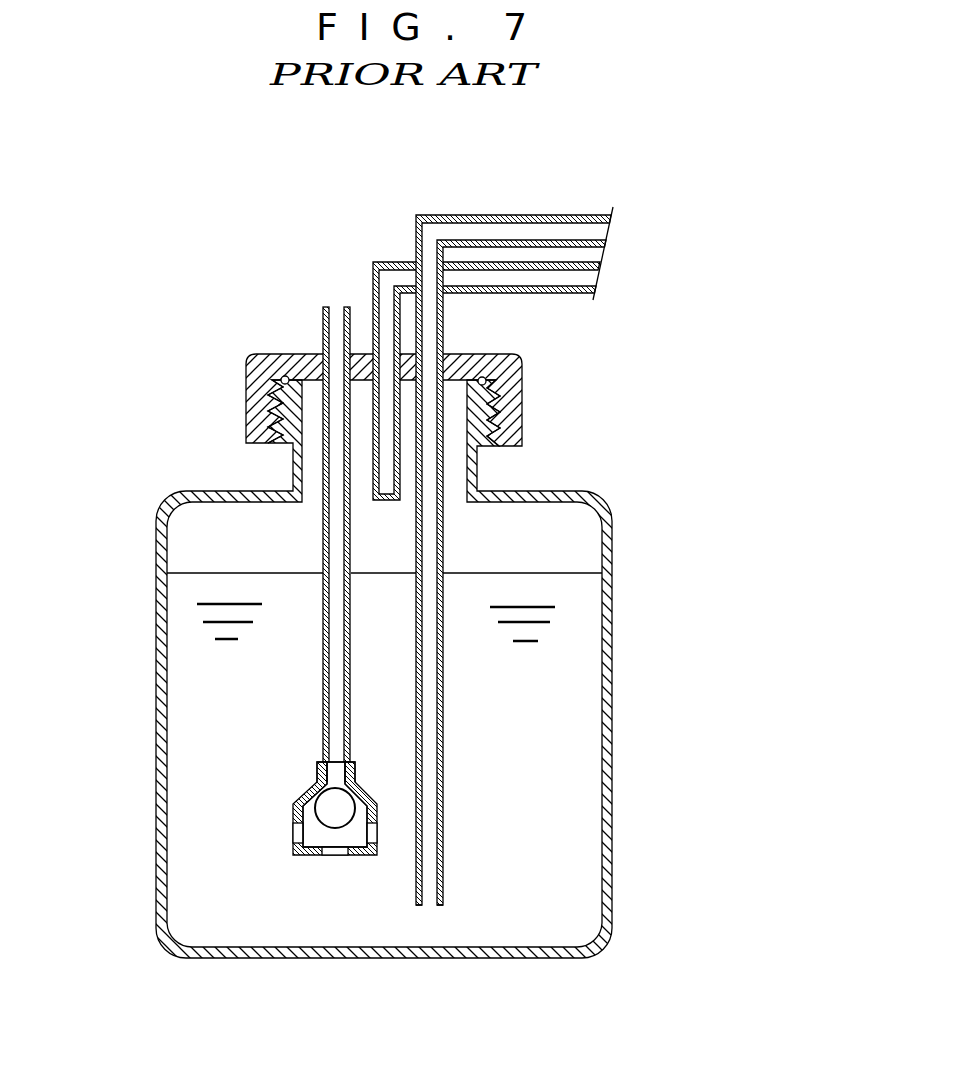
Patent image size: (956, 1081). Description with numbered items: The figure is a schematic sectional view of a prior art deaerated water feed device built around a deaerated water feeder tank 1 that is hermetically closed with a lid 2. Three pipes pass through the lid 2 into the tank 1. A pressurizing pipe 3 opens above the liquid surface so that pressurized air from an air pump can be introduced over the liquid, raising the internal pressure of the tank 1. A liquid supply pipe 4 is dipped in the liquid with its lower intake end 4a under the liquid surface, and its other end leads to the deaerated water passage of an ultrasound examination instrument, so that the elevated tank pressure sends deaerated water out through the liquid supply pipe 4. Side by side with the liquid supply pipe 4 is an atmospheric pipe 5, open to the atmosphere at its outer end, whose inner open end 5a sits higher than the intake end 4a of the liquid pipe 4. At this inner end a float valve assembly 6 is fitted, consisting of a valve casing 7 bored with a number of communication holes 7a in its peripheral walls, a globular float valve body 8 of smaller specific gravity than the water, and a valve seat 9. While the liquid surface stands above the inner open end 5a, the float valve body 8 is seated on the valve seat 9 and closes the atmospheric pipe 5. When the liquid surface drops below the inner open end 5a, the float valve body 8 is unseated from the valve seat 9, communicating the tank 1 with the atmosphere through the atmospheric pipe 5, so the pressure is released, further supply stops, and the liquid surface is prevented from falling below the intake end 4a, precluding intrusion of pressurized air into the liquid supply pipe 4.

The deaerated water feeder tank 1 is at (612, 627).
The lid 2 is at (518, 410).
The pressurizing pipe 3 is at (373, 271).
The liquid supply pipe 4 is at (443, 838).
The intake end of the liquid pipe 4a is at (430, 905).
The atmospheric pipe 5 is at (323, 654).
The inner open end of the atmospheric pipe 5a is at (317, 762).
The float valve assembly 6 is at (331, 868).
The valve casing 7 is at (300, 857).
The communication holes 7a is at (293, 825).
The float valve body 8 is at (348, 812).
The valve seat 9 is at (328, 803).